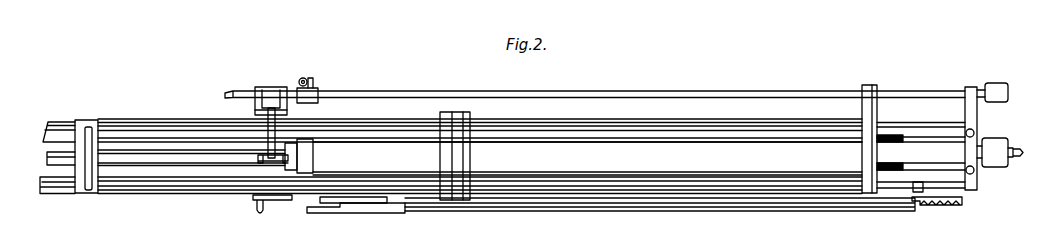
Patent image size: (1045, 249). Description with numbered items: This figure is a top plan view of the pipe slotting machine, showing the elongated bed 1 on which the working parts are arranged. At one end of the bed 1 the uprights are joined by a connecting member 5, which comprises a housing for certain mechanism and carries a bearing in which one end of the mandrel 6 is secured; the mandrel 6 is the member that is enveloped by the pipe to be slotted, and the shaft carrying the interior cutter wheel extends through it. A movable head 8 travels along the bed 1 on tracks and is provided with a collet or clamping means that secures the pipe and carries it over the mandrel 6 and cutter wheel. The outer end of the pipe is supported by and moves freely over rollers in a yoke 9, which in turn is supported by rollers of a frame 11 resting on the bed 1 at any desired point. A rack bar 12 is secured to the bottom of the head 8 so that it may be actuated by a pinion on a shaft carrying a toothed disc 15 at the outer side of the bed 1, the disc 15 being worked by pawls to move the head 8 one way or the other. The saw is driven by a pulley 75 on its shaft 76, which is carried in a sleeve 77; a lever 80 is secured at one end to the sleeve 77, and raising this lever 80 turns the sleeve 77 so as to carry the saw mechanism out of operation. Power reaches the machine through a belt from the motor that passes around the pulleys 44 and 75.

The bed 1 is at (755, 122).
The connecting member 5 is at (960, 152).
The mandrel 6 is at (602, 148).
The movable head 8 is at (465, 112).
The yoke 9 is at (94, 127).
The frame 11 is at (85, 195).
The rack bar 12 is at (183, 155).
The toothed disc 15 is at (360, 205).
The pulley 44 is at (1000, 166).
The pulley 75 is at (994, 81).
The shaft 76 is at (933, 91).
The sleeve 77 is at (712, 87).
The lever 80 is at (877, 113).